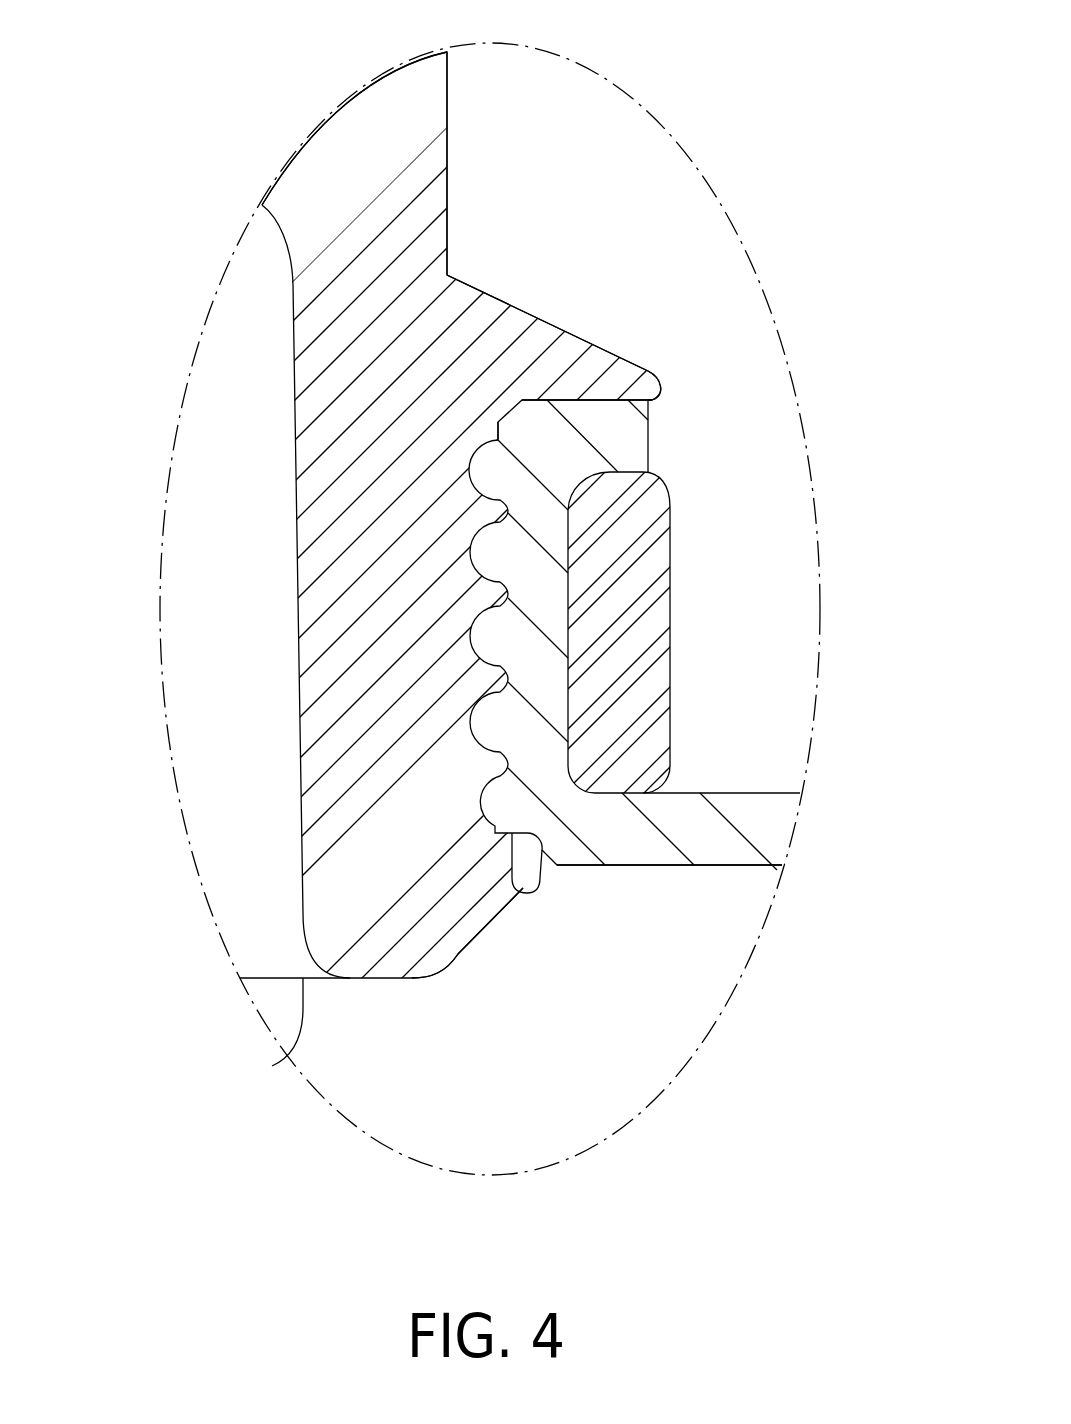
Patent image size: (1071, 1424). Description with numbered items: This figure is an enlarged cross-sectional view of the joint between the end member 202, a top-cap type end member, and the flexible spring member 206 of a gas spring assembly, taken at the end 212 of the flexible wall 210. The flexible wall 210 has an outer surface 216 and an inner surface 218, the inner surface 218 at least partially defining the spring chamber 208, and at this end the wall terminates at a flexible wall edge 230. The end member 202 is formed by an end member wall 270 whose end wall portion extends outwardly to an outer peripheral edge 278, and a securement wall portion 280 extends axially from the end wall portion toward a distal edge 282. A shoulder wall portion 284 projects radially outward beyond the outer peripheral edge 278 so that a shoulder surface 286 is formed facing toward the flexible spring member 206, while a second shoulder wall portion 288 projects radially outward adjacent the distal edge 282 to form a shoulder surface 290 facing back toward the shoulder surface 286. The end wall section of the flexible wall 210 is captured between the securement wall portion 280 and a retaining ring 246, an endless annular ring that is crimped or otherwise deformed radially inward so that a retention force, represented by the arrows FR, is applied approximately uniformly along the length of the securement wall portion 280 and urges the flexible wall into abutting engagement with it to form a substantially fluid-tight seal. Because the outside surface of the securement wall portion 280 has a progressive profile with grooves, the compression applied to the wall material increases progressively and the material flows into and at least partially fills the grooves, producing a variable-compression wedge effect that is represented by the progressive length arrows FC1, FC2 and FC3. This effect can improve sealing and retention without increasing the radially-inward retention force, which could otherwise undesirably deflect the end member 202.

The end member 202 is at (520, 71).
The flexible spring member 206 is at (795, 775).
The spring chamber 208 is at (430, 1132).
The flexible wall 210 is at (719, 860).
The end 212 is at (678, 972).
The outer surface 216 is at (800, 825).
The inner surface 218 is at (760, 877).
The flexible wall edge 230 is at (648, 438).
The retaining ring 246 is at (675, 621).
The end member wall 270 is at (365, 122).
The outer peripheral edge 278 is at (448, 193).
The securement wall portion 280 is at (385, 598).
The distal edge 282 is at (272, 1066).
The shoulder wall portion 284 is at (537, 345).
The shoulder surface 286 is at (587, 397).
The shoulder wall portion 288 is at (458, 908).
The shoulder surface 290 is at (515, 850).
The progressive length arrow FC1 is at (460, 468).
The progressive length arrow FC2 is at (460, 637).
The progressive length arrow FC3 is at (463, 798).
The retention force arrows FR is at (552, 553).